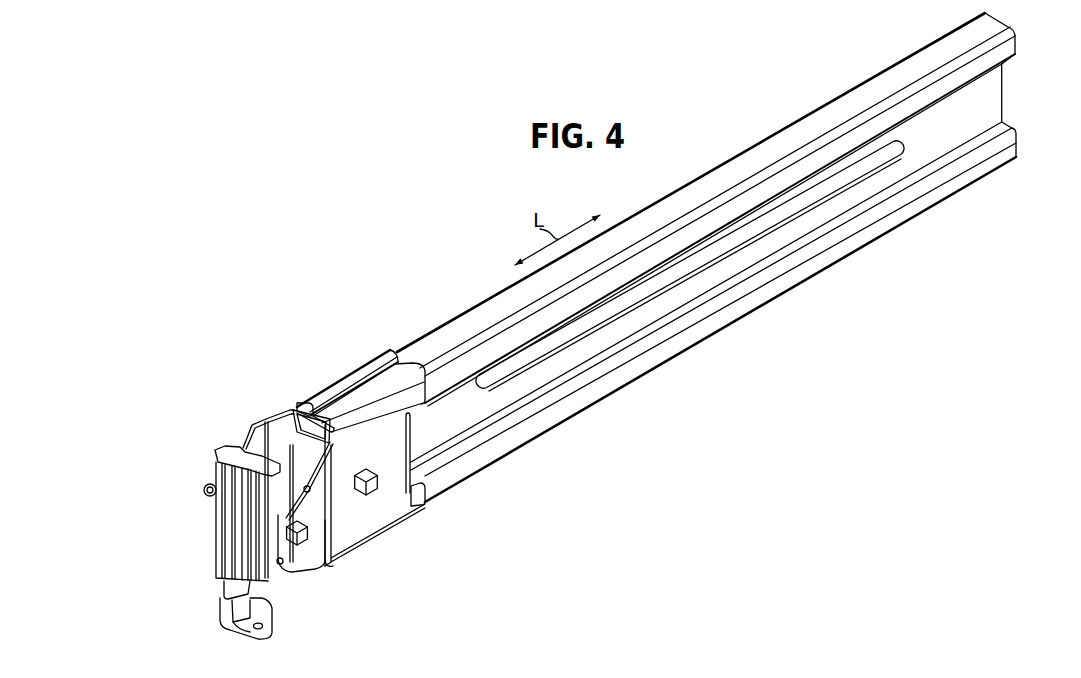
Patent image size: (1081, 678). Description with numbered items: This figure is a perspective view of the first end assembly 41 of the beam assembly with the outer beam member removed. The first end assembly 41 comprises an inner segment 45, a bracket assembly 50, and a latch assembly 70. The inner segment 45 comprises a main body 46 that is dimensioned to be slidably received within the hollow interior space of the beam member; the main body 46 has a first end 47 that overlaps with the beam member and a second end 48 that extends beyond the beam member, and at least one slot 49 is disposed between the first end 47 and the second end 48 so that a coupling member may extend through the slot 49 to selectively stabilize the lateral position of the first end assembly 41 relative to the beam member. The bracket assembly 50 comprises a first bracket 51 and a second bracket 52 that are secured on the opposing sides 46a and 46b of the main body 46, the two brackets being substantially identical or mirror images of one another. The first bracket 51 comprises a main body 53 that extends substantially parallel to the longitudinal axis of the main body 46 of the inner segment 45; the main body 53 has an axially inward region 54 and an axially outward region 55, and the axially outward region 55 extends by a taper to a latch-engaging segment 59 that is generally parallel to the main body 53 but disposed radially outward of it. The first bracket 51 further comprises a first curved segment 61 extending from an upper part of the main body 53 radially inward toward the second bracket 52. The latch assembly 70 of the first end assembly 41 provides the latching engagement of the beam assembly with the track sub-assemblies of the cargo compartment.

The first end assembly 41 is at (218, 410).
The inner segment 45 is at (797, 130).
The main body 46 is at (993, 97).
The first side of the main body 46a is at (447, 373).
The second side of the main body 46b is at (412, 348).
The first end 47 is at (993, 25).
The second end 48 is at (295, 412).
The slot 49 is at (870, 163).
The bracket assembly 50 is at (380, 546).
The first bracket 51 is at (398, 516).
The second bracket 52 is at (326, 379).
The main body 53 is at (400, 451).
The axially inward region 54 is at (424, 502).
The axially outward region 55 is at (340, 560).
The latch-engaging segment 59 is at (307, 565).
The first curved segment 61 is at (387, 397).
The latch assembly 70 is at (200, 596).